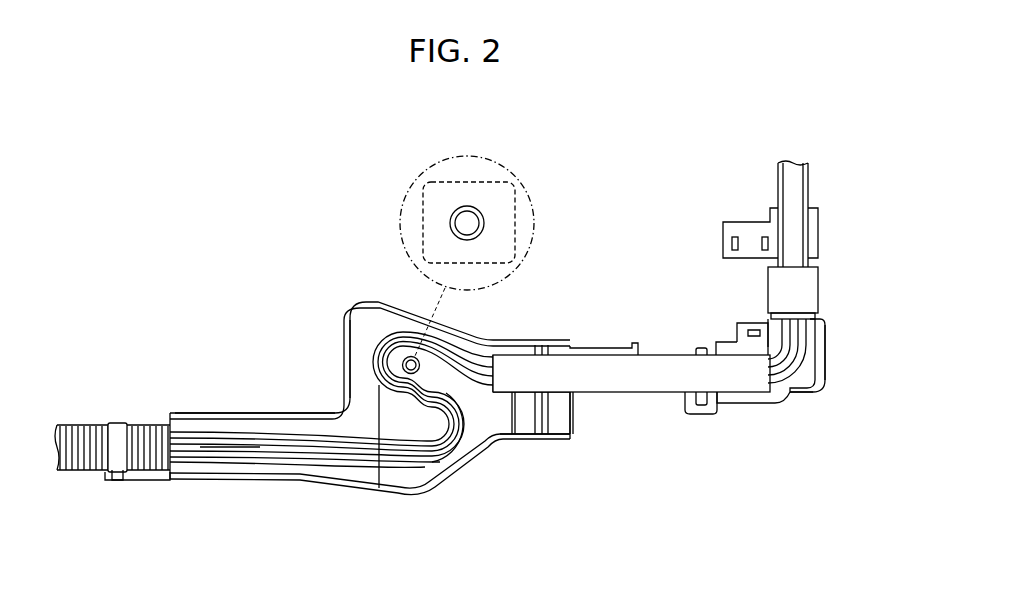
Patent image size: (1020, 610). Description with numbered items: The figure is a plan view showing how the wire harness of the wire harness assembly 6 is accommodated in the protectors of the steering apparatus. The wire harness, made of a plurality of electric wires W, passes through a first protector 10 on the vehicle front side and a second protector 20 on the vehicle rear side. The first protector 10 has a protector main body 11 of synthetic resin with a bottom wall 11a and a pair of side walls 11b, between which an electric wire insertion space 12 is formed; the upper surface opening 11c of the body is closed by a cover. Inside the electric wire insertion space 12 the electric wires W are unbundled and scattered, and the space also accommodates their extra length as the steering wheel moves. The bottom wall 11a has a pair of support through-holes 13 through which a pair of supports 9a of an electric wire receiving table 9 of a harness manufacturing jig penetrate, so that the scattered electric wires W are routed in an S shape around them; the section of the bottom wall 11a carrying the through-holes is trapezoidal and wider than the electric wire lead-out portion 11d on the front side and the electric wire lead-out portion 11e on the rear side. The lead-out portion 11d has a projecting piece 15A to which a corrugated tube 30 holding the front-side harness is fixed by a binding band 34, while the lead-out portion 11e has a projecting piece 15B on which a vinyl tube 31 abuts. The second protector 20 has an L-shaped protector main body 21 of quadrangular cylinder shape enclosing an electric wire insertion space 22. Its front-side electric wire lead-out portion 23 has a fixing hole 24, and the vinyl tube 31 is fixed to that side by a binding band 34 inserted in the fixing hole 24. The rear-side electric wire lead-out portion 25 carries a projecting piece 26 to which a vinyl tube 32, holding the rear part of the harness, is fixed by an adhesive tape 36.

The wire harness assembly 6 is at (356, 200).
The electric wire receiving table 9 is at (530, 228).
The supports 9a is at (514, 262).
The first protector 10 is at (282, 372).
The protector main body 11 is at (452, 490).
The bottom wall 11a is at (502, 439).
The side walls 11b is at (395, 306).
The upper surface opening 11c is at (262, 418).
The electric wire lead-out portion 11d is at (160, 418).
The electric wire lead-out portion 11e is at (580, 425).
The electric wire insertion space 12 is at (366, 484).
The support through-holes 13 is at (402, 358).
The projecting piece 15A is at (140, 482).
The projecting piece 15B is at (615, 348).
The second protector 20 is at (828, 408).
The protector main body 21 is at (786, 420).
The electric wire insertion space 22 is at (755, 325).
The electric wire lead-out portion 23 is at (706, 348).
The fixing hole 24 is at (712, 415).
The electric wire lead-out portion 25 is at (822, 322).
The projecting piece 26 is at (820, 242).
The corrugated tube 30 is at (78, 472).
The vinyl tube 31 is at (636, 395).
The vinyl tube 32 is at (810, 172).
The binding band 34 is at (115, 425).
The adhesive tape 36 is at (812, 285).
The electric wires W is at (399, 500).